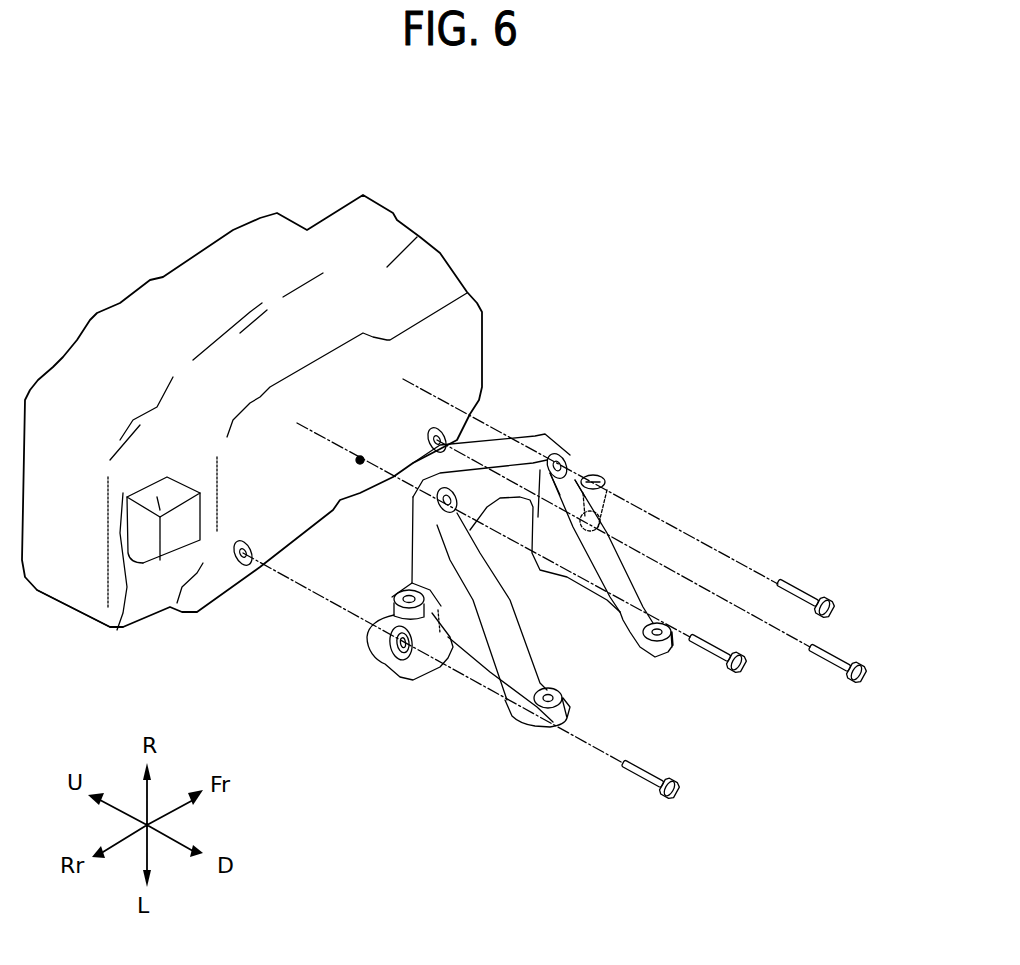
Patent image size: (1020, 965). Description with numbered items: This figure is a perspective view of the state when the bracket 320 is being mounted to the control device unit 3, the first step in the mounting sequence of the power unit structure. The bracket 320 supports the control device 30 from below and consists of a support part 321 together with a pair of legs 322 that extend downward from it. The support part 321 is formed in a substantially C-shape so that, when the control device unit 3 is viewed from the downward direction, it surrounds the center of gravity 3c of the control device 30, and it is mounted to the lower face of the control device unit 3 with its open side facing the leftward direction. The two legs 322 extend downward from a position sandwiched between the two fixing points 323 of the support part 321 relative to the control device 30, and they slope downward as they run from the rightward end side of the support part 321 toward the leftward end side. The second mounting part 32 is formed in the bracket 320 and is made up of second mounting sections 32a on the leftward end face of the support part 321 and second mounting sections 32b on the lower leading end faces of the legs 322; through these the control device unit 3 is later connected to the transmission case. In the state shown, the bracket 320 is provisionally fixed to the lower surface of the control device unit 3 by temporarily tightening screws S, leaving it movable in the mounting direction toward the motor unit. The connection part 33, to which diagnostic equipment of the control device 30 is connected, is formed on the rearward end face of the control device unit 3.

The control device unit 3 is at (368, 150).
The control device 30 is at (163, 277).
The center of gravity 3c is at (360, 456).
The connection part 33 is at (124, 630).
The bracket 320 is at (690, 415).
The support part 321 is at (517, 458).
The leg 322 is at (617, 560).
The fixing point 323 is at (567, 463).
The second mounting part 32 is at (561, 644).
The second mounting section 32a is at (563, 583).
The second mounting section 32b is at (648, 650).
The screw S is at (680, 795).